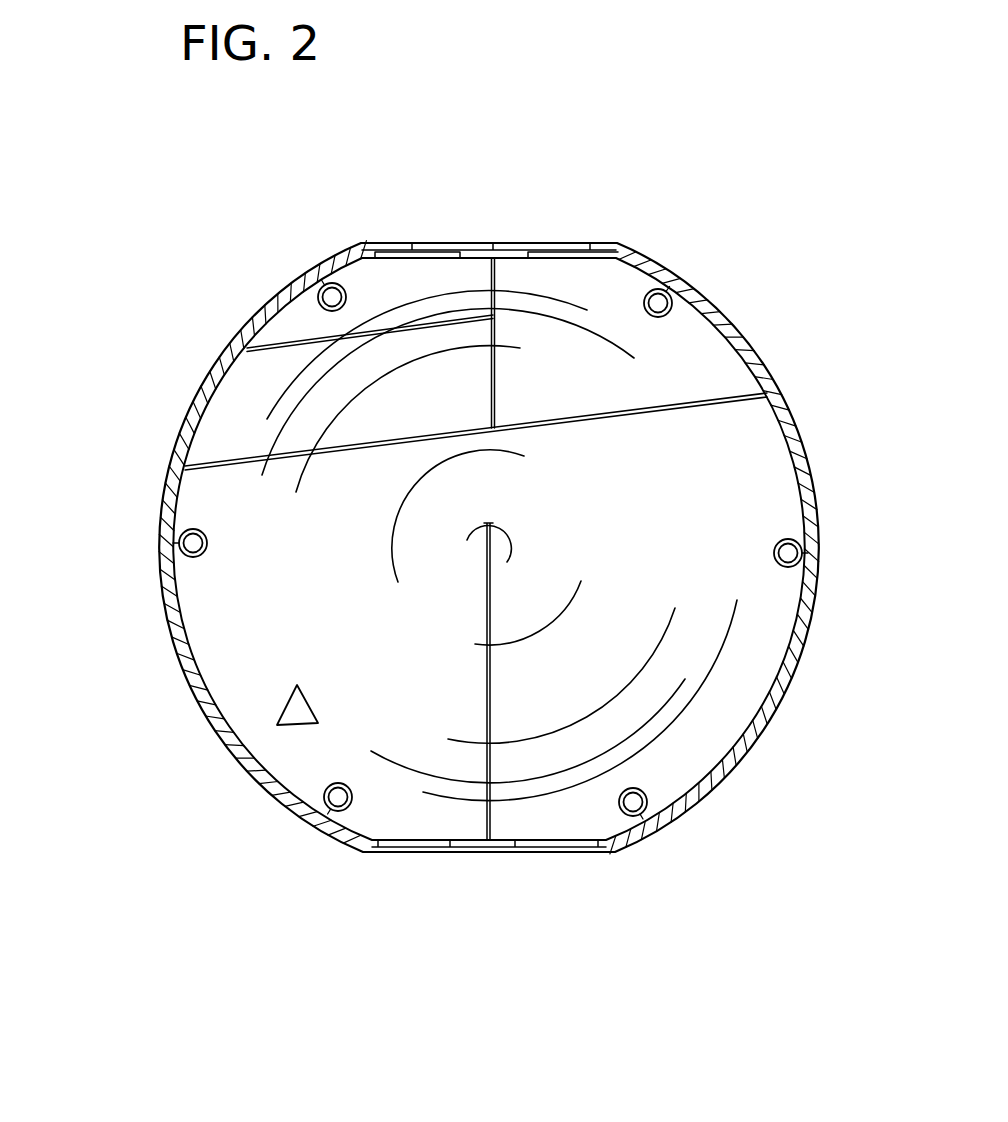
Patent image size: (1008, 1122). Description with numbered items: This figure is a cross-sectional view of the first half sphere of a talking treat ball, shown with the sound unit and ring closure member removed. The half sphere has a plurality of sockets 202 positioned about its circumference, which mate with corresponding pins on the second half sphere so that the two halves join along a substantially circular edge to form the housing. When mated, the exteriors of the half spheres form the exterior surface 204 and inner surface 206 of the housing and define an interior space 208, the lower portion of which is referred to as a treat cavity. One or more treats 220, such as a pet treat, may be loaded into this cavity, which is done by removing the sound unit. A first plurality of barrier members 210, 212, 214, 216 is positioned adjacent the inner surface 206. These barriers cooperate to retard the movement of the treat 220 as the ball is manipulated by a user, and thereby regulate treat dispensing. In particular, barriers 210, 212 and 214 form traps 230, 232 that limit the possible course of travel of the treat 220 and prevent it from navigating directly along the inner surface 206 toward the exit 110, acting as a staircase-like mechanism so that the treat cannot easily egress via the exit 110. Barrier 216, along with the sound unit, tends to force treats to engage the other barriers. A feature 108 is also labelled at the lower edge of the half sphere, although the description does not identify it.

The bottom edge 108 is at (497, 870).
The exit 110 is at (498, 226).
The sockets 202 is at (172, 543).
The exterior surface 204 is at (832, 606).
The inner surface 206 is at (765, 672).
The interior space 208 is at (211, 531).
The barrier member 210 is at (393, 327).
The barrier member 212 is at (417, 412).
The barrier member 214 is at (496, 385).
The barrier member 216 is at (489, 682).
The treat 220 is at (265, 721).
The trap 230 is at (305, 308).
The trap 232 is at (244, 396).